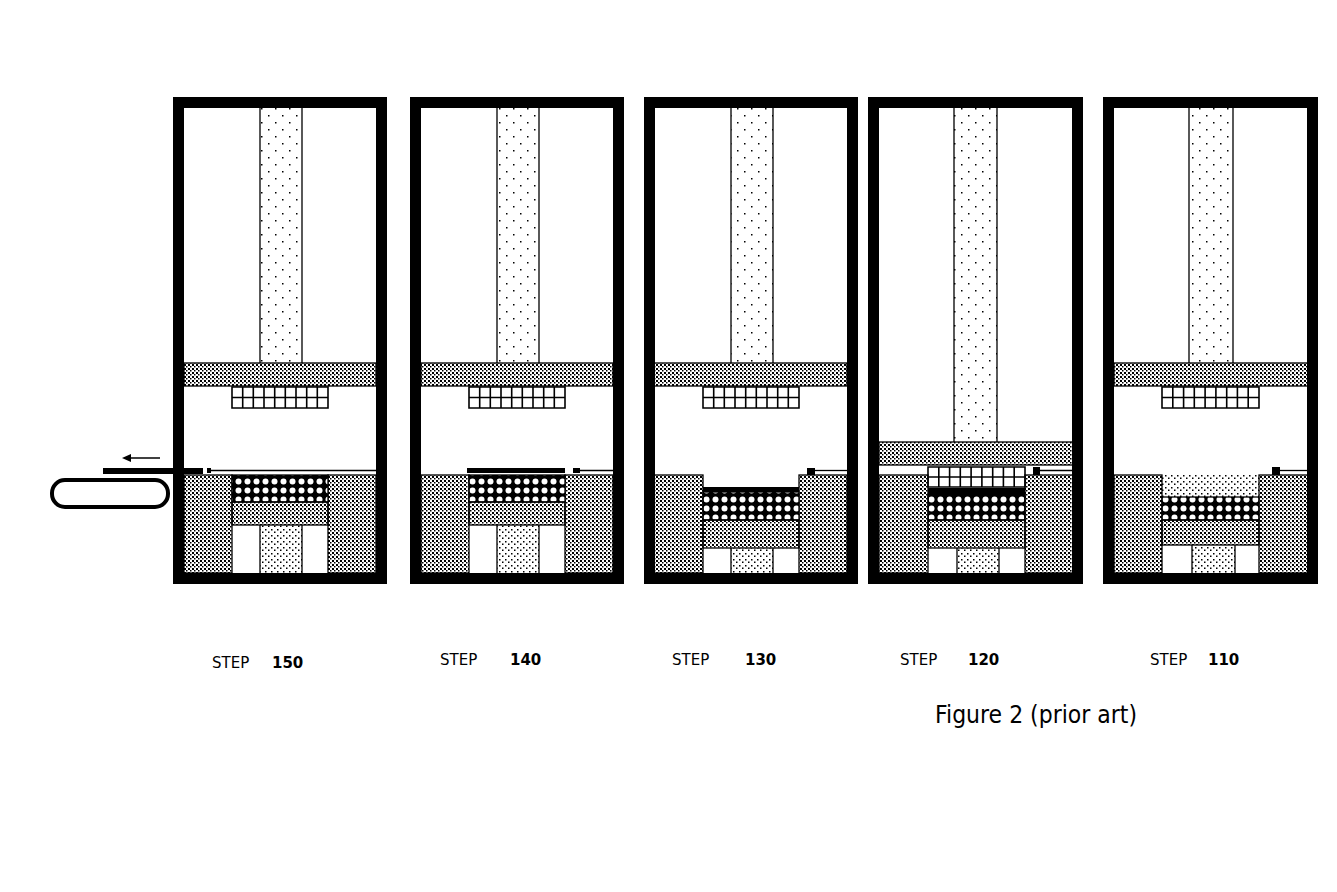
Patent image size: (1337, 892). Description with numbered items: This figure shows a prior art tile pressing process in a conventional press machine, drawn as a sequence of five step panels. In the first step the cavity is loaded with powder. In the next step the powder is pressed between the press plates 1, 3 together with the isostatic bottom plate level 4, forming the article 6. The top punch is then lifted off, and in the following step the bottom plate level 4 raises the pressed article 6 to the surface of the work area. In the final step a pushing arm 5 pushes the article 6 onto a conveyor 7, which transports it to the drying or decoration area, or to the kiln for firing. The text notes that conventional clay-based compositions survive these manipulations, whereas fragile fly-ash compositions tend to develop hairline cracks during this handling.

The press plate 1 is at (743, 402).
The press plate 3 is at (733, 520).
The bottom plate level 4 is at (763, 537).
The pushing arm 5 is at (812, 474).
The article 6 is at (117, 465).
The conveyor 7 is at (103, 508).